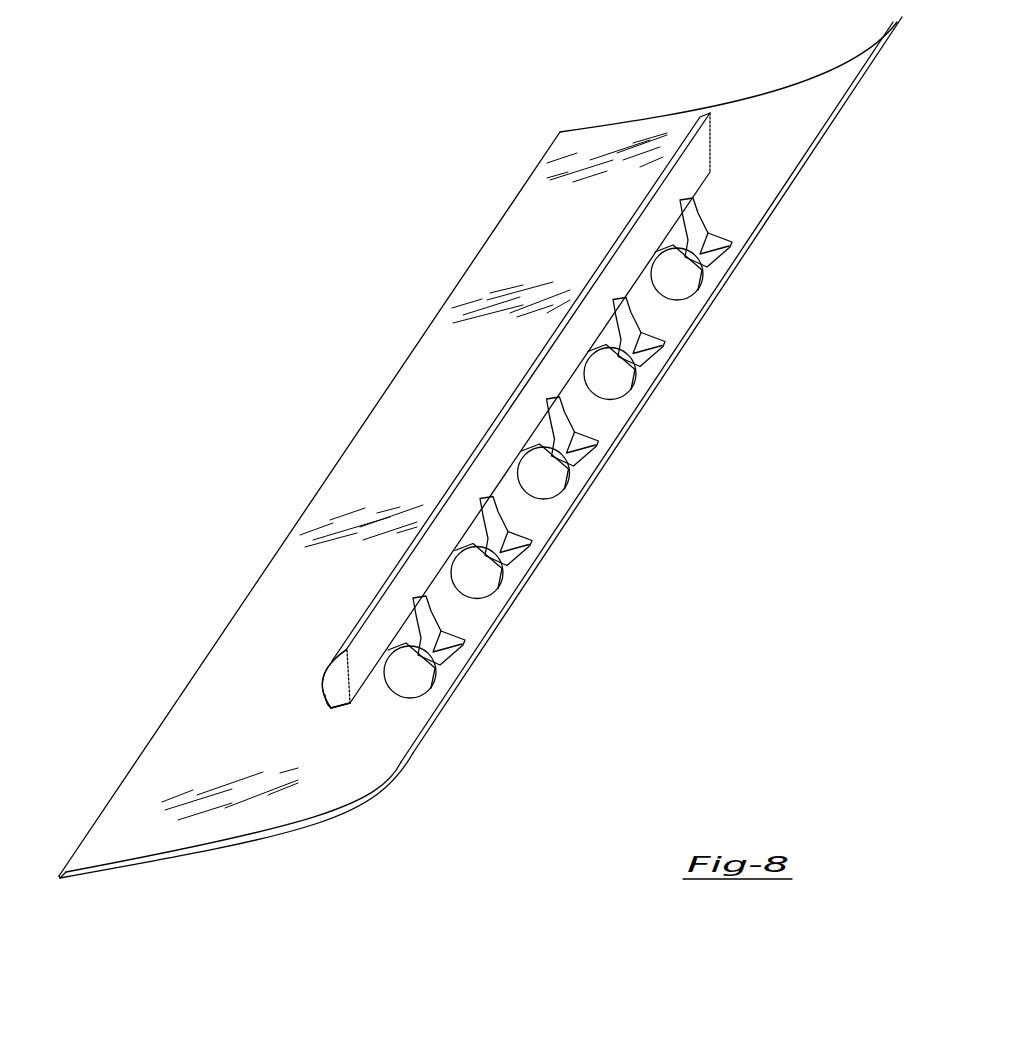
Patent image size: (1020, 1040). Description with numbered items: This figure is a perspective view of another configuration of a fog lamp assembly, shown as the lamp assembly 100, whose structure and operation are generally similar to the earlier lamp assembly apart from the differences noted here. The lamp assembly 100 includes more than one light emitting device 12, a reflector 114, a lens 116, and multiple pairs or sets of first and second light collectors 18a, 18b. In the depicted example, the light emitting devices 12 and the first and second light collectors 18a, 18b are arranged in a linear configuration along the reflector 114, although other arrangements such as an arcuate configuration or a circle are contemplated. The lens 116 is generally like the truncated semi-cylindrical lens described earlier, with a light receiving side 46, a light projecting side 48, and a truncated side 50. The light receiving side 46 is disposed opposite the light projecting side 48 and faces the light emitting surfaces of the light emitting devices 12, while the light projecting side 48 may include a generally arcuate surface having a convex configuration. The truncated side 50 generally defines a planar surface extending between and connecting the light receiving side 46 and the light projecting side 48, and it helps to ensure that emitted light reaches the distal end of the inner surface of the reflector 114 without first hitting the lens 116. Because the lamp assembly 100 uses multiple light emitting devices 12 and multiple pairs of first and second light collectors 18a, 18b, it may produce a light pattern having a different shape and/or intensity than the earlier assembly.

The lamp assembly 100 is at (333, 274).
The reflector 114 is at (485, 223).
The light receiving side 46 is at (706, 139).
The light projecting side 48 is at (323, 682).
The lens 116 is at (318, 654).
The truncated side 50 is at (337, 710).
The light emitting device 12 is at (607, 475).
The first light collector 18a is at (683, 300).
The second light collector 18b is at (736, 235).